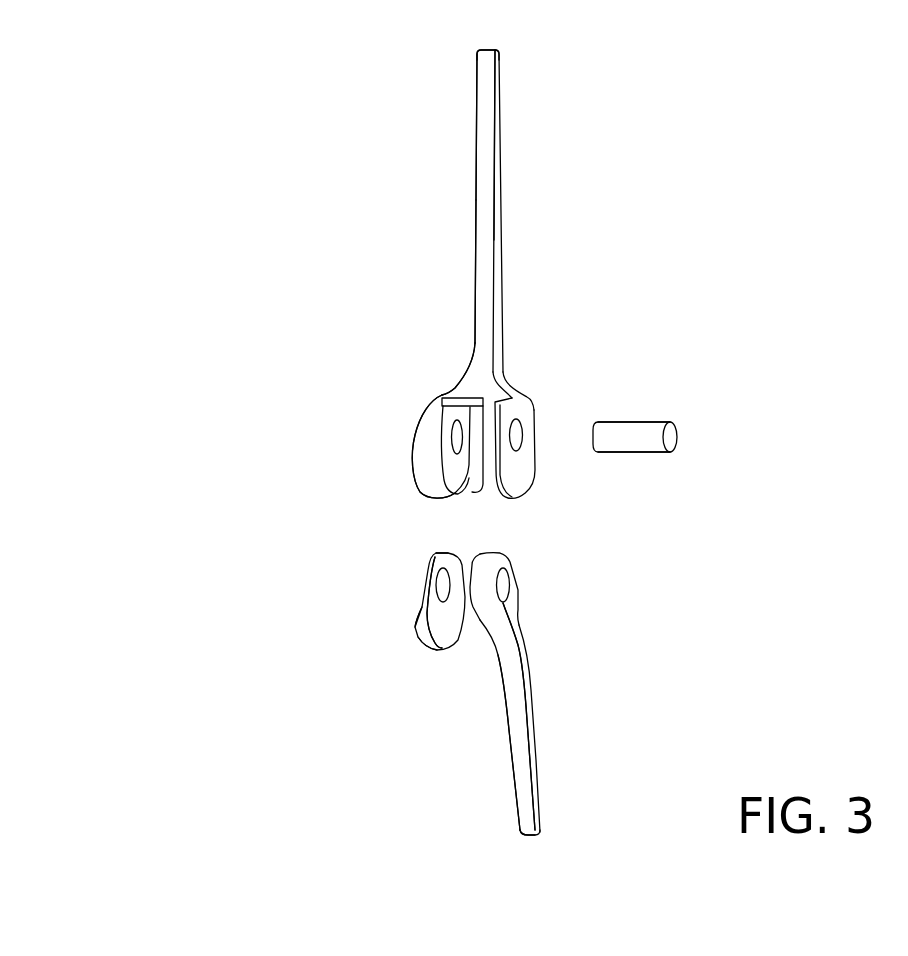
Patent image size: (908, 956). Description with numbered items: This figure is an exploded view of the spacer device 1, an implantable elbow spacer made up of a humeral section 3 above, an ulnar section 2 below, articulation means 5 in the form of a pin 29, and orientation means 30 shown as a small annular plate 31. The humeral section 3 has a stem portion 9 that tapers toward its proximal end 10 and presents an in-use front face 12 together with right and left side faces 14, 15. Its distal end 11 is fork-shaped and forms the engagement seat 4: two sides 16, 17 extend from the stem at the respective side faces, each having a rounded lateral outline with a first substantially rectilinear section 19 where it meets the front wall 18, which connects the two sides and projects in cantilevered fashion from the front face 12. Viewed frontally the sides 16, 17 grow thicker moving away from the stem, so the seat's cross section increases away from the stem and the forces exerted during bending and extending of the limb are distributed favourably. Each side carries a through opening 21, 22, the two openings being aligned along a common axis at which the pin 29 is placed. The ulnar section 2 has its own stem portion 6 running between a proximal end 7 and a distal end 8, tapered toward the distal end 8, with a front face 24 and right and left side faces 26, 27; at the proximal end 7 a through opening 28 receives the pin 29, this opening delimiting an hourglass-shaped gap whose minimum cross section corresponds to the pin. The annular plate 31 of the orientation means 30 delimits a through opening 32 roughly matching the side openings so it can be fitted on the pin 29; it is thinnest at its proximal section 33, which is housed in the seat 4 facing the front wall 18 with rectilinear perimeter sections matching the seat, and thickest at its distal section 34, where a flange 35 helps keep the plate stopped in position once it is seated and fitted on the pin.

The spacer device 1 is at (183, 415).
The ulnar section 2 is at (405, 754).
The humeral section 3 is at (428, 187).
The engagement seat 4 is at (470, 413).
The articulation means 5 is at (684, 404).
The stem portion 6 is at (513, 683).
The proximal end 7 is at (507, 555).
The distal end 8 is at (538, 833).
The stem portion 9 is at (486, 213).
The proximal end 10 is at (488, 48).
The distal end 11 is at (392, 442).
The front face 12 is at (480, 273).
The side face 14 is at (498, 158).
The side face 15 is at (475, 122).
The side 16 is at (525, 477).
The side 17 is at (413, 473).
The front wall 18 is at (475, 388).
The first rectilinear section 19 is at (525, 400).
The through opening 21 is at (517, 432).
The through opening 22 is at (457, 440).
The front face 24 is at (525, 805).
The side face 26 is at (535, 730).
The side face 27 is at (513, 773).
The through opening 28 is at (507, 587).
The pin 29 is at (640, 447).
The orientation means 30 is at (376, 612).
The annular plate 31 is at (453, 620).
The through opening 32 is at (437, 585).
The proximal section 33 is at (438, 555).
The distal section 34 is at (435, 652).
The flange 35 is at (413, 633).